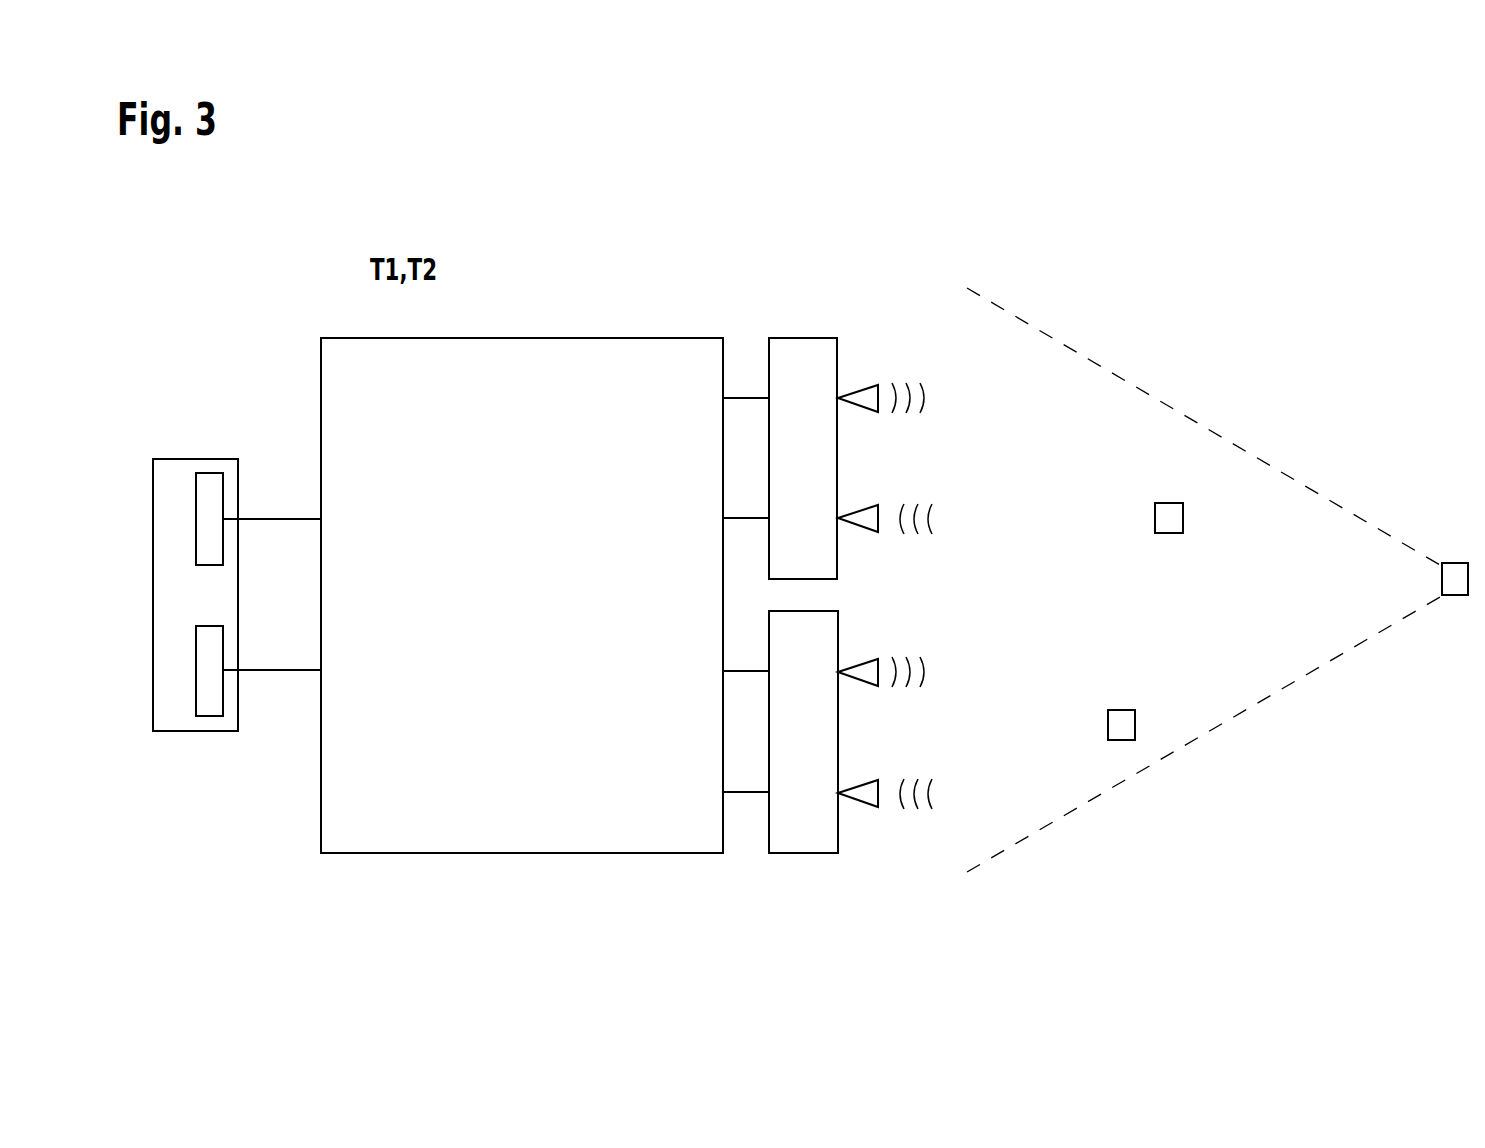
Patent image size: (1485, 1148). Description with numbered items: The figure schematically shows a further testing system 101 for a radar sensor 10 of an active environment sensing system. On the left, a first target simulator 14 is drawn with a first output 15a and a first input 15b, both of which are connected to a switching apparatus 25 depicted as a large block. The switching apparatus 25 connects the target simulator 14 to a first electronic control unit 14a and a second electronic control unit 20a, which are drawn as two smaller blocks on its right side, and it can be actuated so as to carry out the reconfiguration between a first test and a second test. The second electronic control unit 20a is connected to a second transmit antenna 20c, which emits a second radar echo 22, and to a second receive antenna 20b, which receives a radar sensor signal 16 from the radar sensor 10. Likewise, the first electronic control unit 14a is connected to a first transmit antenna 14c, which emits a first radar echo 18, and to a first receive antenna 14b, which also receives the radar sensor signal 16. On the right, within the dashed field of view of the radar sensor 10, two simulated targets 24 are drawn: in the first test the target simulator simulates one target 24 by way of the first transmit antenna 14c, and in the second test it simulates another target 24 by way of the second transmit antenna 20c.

The testing system 101 is at (384, 306).
The switching apparatus 25 is at (547, 372).
The second electronic control unit 20a is at (786, 372).
The first electronic control unit 14a is at (785, 820).
The first target simulator 14 is at (173, 492).
The first output 15a is at (196, 519).
The first input 15b is at (196, 670).
The second transmit antenna 20c is at (878, 386).
The second radar echo 22 is at (922, 410).
The second receive antenna 20b is at (878, 506).
The radar sensor signal 16 is at (928, 532).
The first transmit antenna 14c is at (878, 660).
The first radar echo 18 is at (922, 684).
The first receive antenna 14b is at (878, 781).
The target 24 is at (1168, 503).
The radar sensor 10 is at (1455, 563).